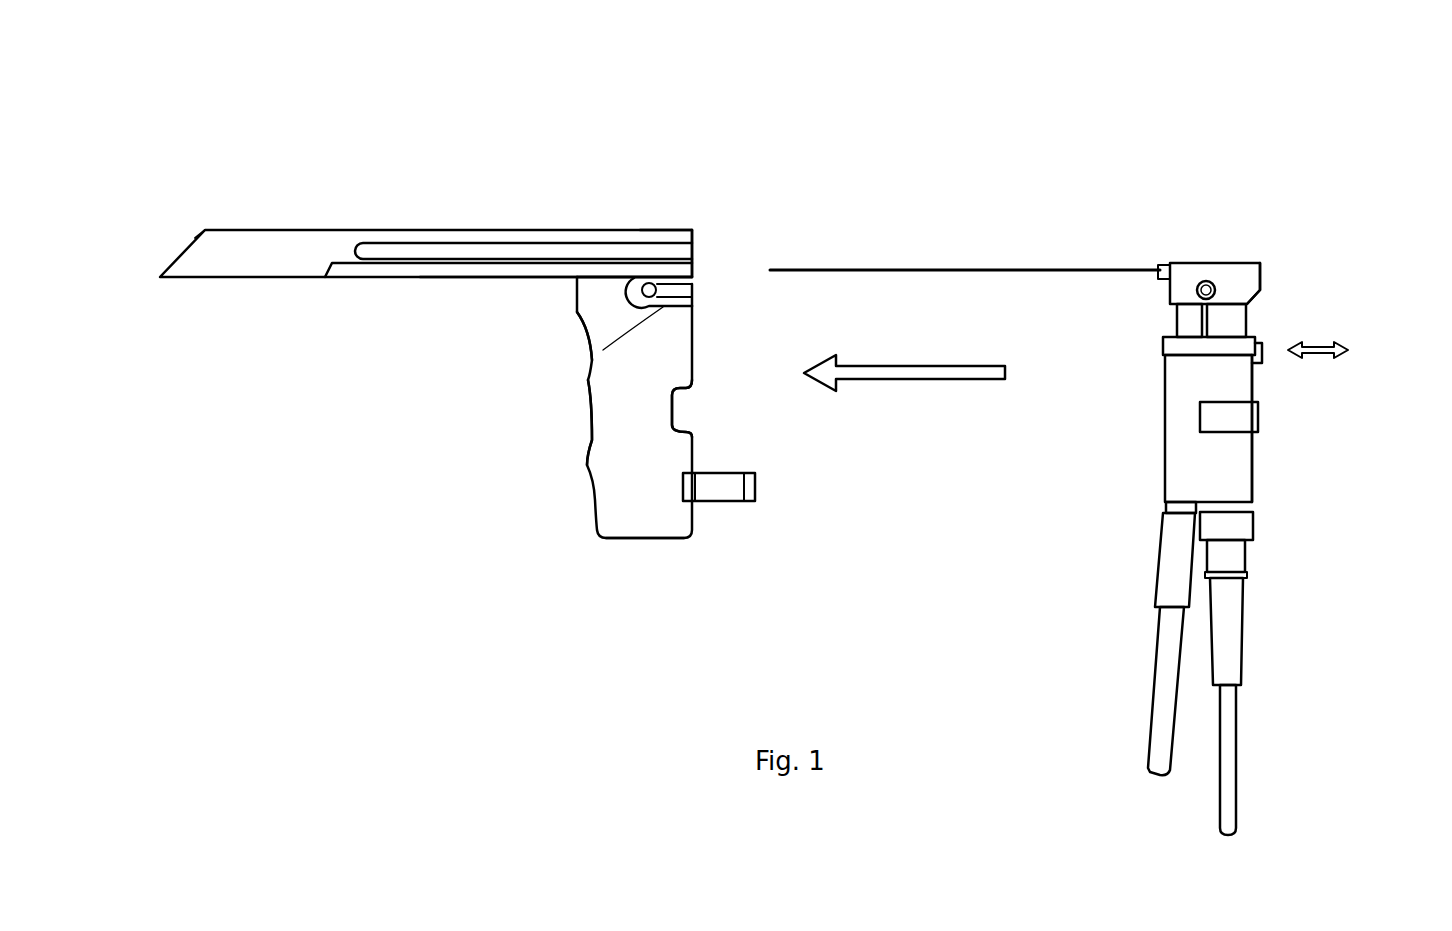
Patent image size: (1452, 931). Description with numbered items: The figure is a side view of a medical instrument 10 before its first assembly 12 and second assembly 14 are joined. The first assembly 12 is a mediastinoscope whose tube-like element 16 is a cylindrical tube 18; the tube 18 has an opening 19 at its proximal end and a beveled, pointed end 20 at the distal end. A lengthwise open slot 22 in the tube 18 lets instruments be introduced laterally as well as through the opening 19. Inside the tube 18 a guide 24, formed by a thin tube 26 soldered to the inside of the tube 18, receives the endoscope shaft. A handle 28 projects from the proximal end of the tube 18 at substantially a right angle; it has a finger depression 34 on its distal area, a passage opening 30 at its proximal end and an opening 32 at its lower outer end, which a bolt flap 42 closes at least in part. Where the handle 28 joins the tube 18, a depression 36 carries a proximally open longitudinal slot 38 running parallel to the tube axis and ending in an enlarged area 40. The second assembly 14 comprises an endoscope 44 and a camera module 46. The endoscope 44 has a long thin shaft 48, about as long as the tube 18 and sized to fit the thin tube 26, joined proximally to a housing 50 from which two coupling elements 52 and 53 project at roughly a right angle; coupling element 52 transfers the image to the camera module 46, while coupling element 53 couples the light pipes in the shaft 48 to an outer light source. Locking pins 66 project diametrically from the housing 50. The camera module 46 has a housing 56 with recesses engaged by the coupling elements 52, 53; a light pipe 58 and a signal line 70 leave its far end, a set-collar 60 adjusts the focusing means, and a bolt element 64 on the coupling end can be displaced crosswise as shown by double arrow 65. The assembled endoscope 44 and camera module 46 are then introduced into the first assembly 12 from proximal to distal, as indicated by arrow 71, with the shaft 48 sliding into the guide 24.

The medical instrument 10 is at (847, 182).
The first assembly 12 is at (503, 212).
The second assembly 14 is at (1092, 222).
The tube-like element 16 is at (255, 262).
The cylindrical tube 18 is at (655, 243).
The opening 19 is at (692, 232).
The pointed end 20 is at (190, 240).
The open slot 22 is at (583, 250).
The guide 24 is at (347, 265).
The thin tube 26 is at (457, 277).
The handle 28 is at (612, 522).
The passage opening 30 is at (695, 448).
The opening 32 is at (652, 540).
The finger depression 34 is at (590, 463).
The depression 36 is at (692, 320).
The longitudinal slot 38 is at (572, 367).
The enlarged area 40 is at (634, 292).
The bolt flap 42 is at (728, 490).
The endoscope 44 is at (1190, 268).
The camera module 46 is at (1238, 482).
The shaft 48 is at (955, 262).
The housing 50 is at (1247, 265).
The coupling element 52 is at (1230, 320).
The coupling element 53 is at (1190, 320).
The housing 56 is at (1250, 450).
The light pipe 58 is at (1167, 563).
The set-collar 60 is at (1250, 420).
The bolt element 64 is at (1192, 352).
The double arrow 65 is at (1318, 356).
The locking pins 66 is at (1213, 284).
The line 70 is at (1230, 645).
The arrow 71 is at (927, 372).